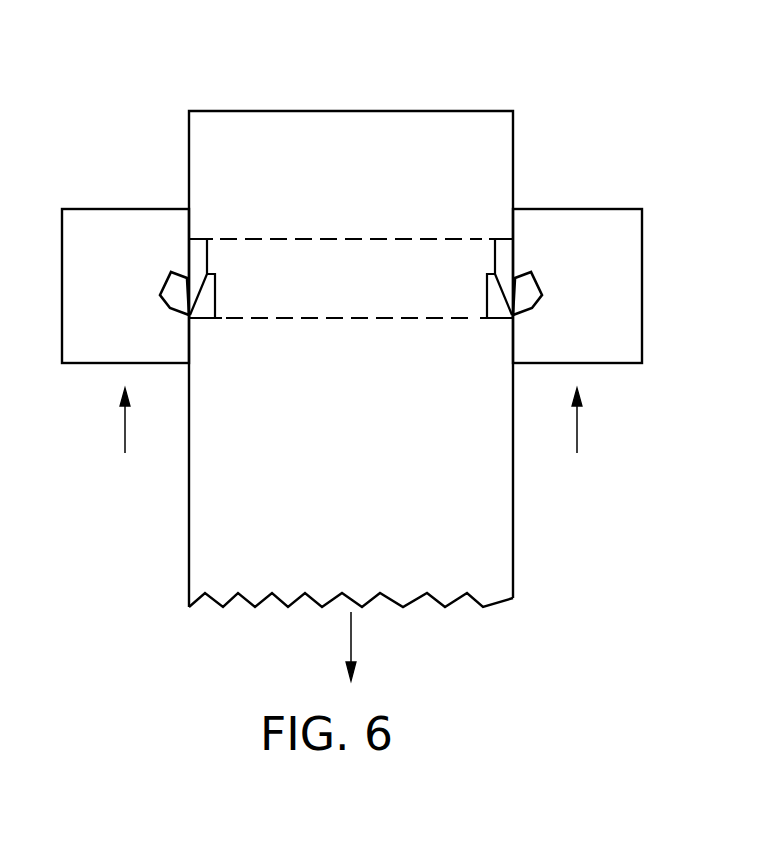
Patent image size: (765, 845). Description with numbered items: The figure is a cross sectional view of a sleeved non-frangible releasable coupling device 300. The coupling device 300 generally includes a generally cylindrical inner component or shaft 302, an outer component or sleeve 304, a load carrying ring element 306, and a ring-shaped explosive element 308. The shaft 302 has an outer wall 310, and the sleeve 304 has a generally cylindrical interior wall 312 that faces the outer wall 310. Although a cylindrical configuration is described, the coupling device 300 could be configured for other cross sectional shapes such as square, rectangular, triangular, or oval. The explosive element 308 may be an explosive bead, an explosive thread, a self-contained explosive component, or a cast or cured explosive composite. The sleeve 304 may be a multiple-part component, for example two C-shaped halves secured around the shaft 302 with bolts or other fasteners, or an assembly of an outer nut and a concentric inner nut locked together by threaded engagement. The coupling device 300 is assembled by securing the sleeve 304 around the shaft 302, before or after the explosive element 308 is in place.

The sleeved non-frangible releasable coupling device 300 is at (215, 93).
The shaft 302 is at (425, 111).
The sleeve 304 is at (106, 209).
The load carrying ring element 306 is at (196, 251).
The ring-shaped explosive element 308 is at (167, 286).
The outer wall 310 is at (188, 542).
The interior wall 312 is at (190, 339).